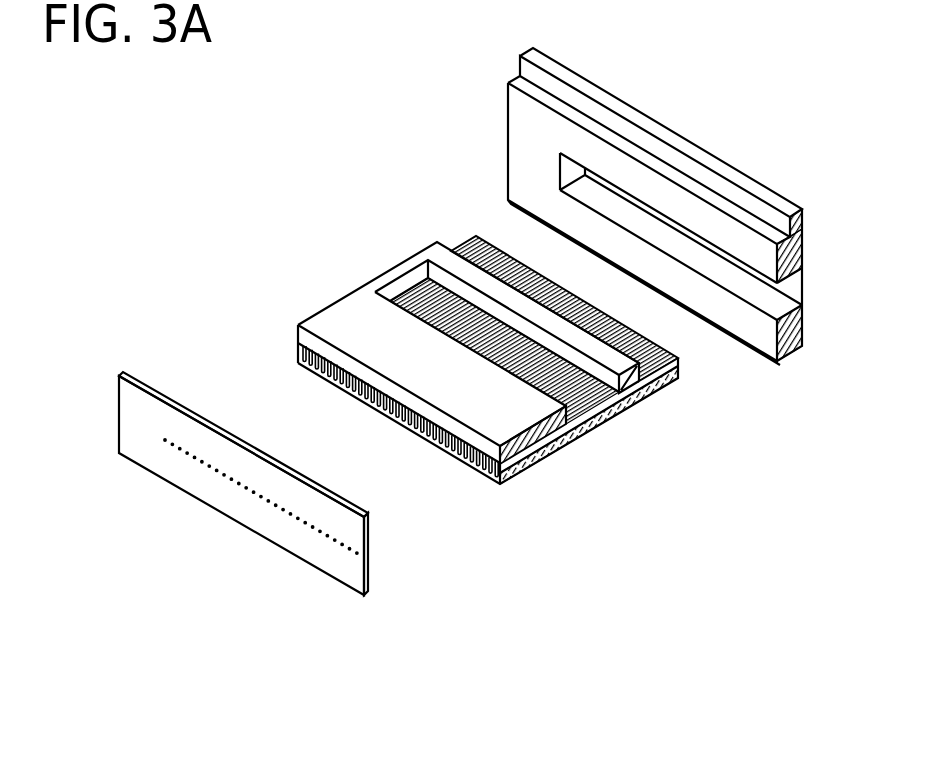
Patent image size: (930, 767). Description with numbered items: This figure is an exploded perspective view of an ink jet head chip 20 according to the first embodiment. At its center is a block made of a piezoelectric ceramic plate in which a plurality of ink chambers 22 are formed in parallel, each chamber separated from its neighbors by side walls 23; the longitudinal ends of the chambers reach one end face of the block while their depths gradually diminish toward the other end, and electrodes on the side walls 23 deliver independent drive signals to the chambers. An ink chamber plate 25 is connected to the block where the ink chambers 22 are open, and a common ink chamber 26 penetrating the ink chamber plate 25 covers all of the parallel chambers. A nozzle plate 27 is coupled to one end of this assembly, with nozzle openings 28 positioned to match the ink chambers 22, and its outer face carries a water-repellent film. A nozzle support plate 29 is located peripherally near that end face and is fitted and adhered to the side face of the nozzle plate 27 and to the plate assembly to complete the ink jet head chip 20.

The ink jet head chip 20 is at (170, 202).
The ink chambers 22 is at (491, 482).
The side walls 23 is at (454, 456).
The ink chamber plate 25 is at (343, 312).
The common ink chamber 26 is at (415, 275).
The nozzle plate 27 is at (141, 380).
The nozzle openings 28 is at (180, 450).
The nozzle support plate 29 is at (752, 222).